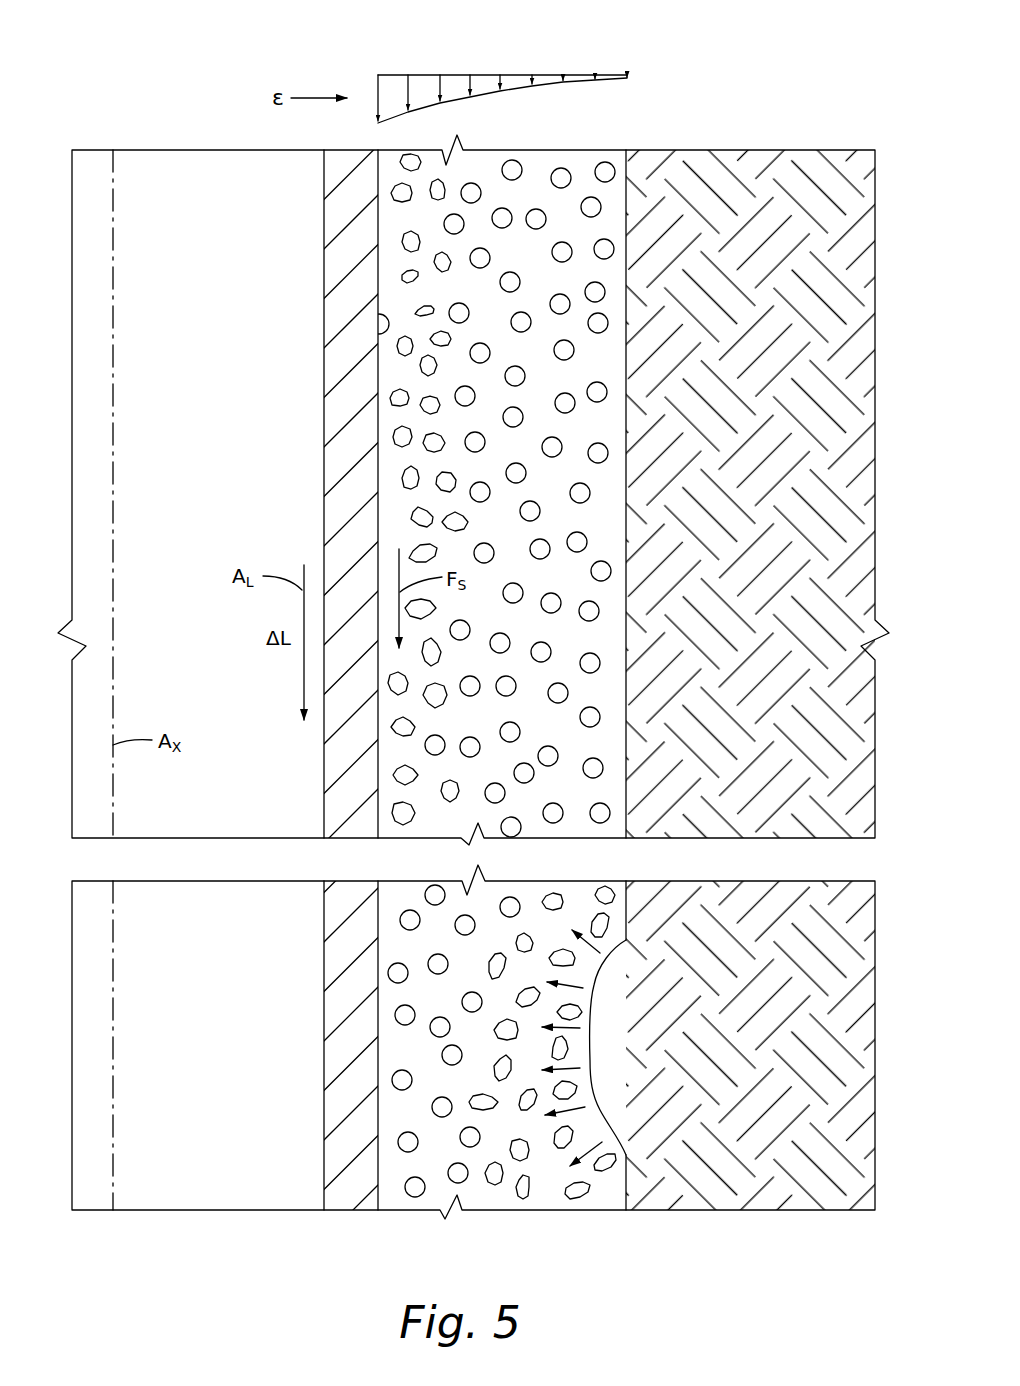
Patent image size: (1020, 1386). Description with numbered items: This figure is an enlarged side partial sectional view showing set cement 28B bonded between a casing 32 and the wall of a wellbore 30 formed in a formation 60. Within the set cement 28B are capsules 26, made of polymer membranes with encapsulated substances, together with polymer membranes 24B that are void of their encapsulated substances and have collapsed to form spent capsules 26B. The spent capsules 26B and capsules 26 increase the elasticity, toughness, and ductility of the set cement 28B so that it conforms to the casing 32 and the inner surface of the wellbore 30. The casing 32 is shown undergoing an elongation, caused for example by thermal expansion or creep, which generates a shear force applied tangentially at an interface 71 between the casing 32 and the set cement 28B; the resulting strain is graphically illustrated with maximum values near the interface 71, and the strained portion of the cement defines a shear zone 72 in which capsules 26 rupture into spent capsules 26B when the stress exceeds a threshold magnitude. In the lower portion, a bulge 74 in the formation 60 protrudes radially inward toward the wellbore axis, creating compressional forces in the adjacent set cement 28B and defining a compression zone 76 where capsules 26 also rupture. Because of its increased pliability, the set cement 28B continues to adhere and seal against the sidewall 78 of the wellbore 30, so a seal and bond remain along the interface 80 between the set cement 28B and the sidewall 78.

The shear zone 72 is at (378, 55).
The capsules 26 is at (560, 176).
The polymer membranes 24B is at (404, 243).
The interface 71 is at (380, 314).
The spent capsules 26B is at (406, 375).
The set cement 28B is at (406, 457).
The wellbore 30 is at (213, 529).
The casing 32 is at (340, 960).
The formation 60 is at (761, 654).
The interface 80 is at (634, 938).
The compression zone 76 is at (544, 1177).
The bulge 74 is at (609, 1189).
The sidewall 78 is at (627, 1176).